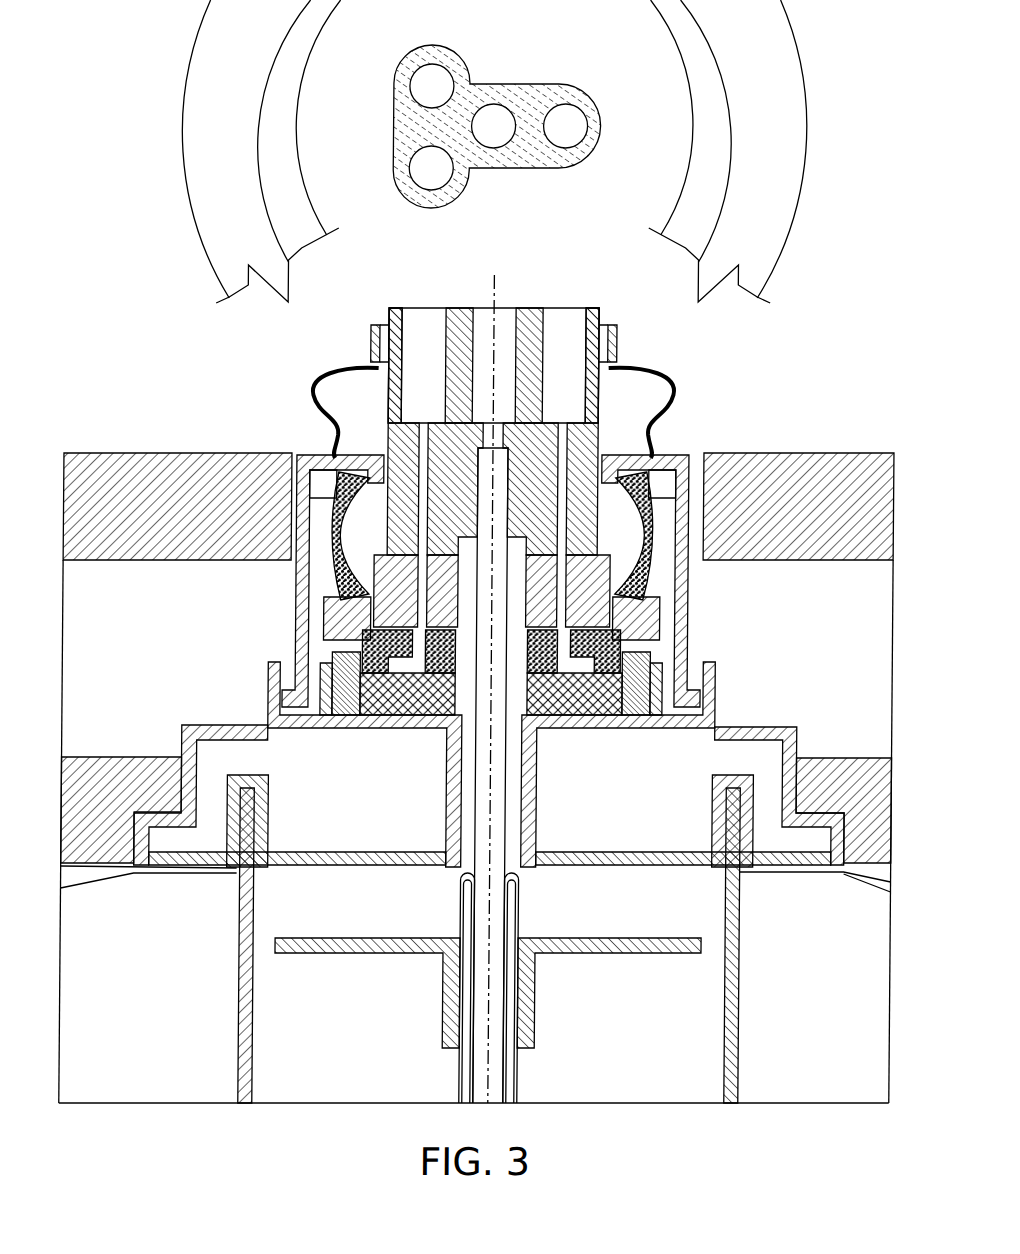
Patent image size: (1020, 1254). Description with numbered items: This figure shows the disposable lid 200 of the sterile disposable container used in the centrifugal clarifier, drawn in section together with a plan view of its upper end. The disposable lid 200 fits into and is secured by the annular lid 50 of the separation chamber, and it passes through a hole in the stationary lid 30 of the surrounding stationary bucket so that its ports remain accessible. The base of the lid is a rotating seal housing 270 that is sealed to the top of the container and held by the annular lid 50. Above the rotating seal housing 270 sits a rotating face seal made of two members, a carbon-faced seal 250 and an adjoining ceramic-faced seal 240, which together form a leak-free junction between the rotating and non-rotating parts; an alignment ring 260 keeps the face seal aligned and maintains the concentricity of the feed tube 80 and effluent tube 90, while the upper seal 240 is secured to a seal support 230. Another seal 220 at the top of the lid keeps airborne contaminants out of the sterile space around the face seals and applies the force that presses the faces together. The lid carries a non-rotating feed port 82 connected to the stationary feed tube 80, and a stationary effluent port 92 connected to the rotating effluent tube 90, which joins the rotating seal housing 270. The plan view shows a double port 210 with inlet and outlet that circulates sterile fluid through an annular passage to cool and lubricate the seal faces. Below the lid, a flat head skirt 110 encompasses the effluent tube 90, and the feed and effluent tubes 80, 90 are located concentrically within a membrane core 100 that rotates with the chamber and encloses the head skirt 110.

The disposable lid 200 is at (170, 371).
The port 210 is at (426, 85).
The feed port 82 is at (495, 125).
The effluent port 92 is at (568, 127).
The seal 220 is at (684, 382).
The stationary lid 30 is at (780, 452).
The seal support 230 is at (666, 618).
The rotating face seal member 240 is at (590, 654).
The alignment ring 260 is at (640, 664).
The rotating face seal member 250 is at (600, 693).
The rotating seal housing 270 is at (718, 698).
The annular lid 50 is at (864, 802).
The effluent tube 90 is at (533, 895).
The membrane core 100 is at (746, 900).
The head skirt 110 is at (609, 957).
The feed tube 80 is at (516, 982).